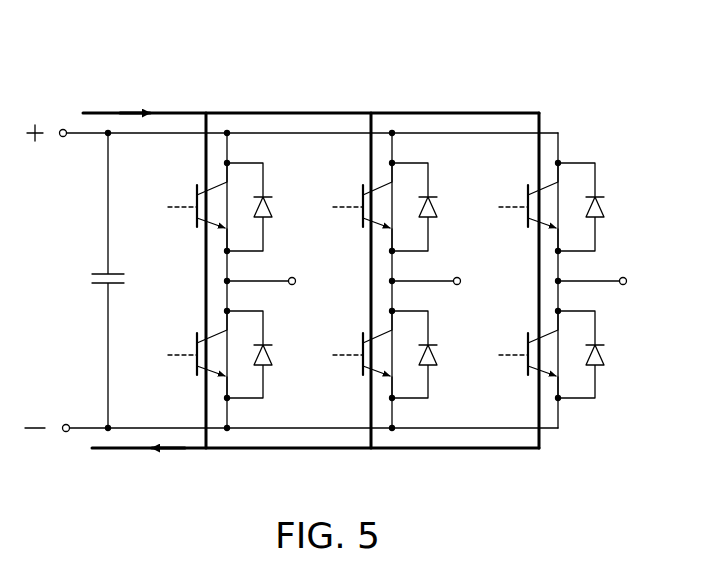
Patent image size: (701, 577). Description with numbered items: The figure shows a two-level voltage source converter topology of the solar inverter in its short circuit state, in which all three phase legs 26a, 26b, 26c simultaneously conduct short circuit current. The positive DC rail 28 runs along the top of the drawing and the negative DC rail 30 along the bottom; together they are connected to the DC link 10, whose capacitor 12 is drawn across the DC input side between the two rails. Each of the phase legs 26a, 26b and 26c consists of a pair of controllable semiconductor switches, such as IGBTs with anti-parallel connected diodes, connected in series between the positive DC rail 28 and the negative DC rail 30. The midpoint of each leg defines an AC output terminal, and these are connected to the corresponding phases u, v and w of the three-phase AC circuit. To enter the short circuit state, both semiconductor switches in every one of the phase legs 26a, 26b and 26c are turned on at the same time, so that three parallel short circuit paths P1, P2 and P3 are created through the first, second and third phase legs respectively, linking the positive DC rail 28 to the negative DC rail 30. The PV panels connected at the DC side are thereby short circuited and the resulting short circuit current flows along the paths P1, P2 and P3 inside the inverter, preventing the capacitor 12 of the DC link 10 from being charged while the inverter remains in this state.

The DC link 10 is at (73, 108).
The capacitor 12 is at (82, 283).
The first phase leg 26a is at (276, 150).
The second phase leg 26b is at (438, 150).
The third phase leg 26c is at (608, 153).
The positive DC rail 28 is at (513, 130).
The negative DC rail 30 is at (465, 430).
The short circuit path P1 is at (204, 164).
The short circuit path P2 is at (370, 312).
The short circuit path P3 is at (543, 298).
The U phase u is at (270, 281).
The V phase v is at (434, 281).
The W phase w is at (602, 281).